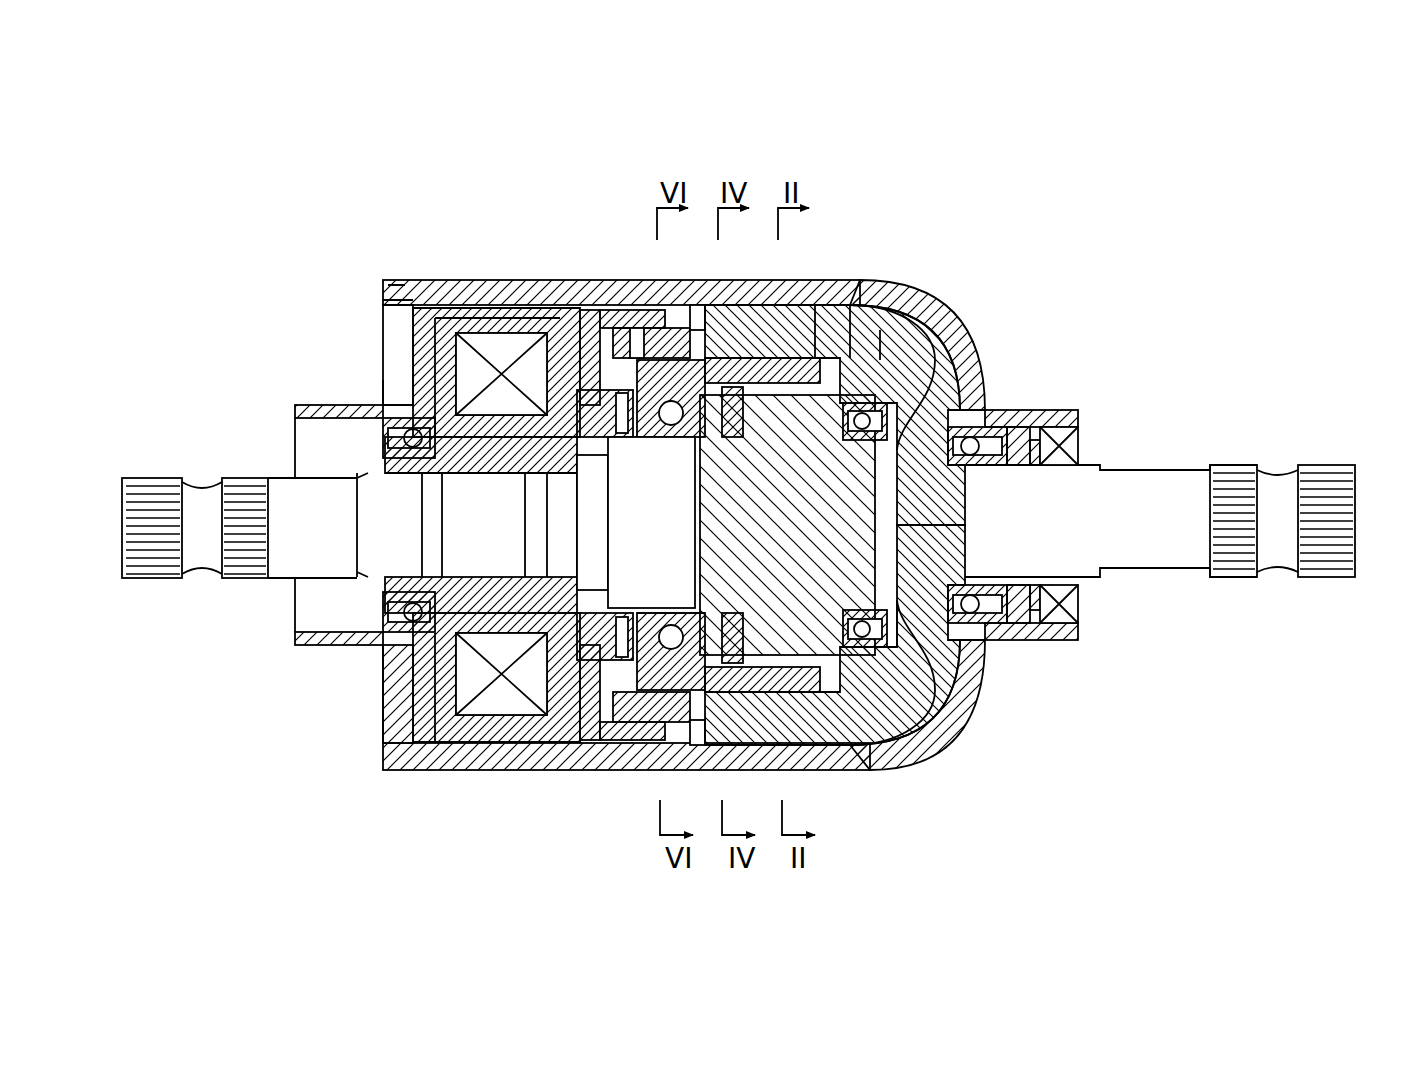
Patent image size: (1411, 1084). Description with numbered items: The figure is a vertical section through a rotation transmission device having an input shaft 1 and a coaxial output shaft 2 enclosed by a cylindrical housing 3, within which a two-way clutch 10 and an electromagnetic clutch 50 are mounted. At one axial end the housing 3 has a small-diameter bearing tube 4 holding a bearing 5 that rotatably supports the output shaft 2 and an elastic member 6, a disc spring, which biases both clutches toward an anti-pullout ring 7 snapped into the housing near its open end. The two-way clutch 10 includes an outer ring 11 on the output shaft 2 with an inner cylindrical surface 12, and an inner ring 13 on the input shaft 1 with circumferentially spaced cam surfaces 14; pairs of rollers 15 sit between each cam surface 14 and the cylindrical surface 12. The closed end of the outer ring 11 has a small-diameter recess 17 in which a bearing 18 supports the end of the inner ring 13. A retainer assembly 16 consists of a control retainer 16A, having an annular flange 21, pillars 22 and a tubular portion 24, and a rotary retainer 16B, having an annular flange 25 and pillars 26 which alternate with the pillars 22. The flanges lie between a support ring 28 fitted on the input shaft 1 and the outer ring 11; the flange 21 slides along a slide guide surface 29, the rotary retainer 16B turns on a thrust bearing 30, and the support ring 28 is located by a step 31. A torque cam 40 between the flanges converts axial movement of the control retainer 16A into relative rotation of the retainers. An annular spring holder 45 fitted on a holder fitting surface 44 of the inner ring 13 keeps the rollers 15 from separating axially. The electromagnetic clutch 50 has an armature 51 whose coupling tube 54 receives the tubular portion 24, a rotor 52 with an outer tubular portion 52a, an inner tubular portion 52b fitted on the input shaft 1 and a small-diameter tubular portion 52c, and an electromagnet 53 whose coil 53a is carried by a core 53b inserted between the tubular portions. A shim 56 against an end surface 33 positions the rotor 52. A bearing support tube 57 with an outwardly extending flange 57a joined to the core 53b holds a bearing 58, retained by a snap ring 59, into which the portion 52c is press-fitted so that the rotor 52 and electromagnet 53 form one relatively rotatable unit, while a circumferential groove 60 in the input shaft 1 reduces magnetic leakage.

The input shaft 1 is at (153, 478).
The output shaft 2 is at (1152, 480).
The housing 3 is at (385, 278).
The bearing tube 4 is at (1060, 418).
The bearing 5 is at (990, 427).
The elastic member 6 is at (1030, 427).
The anti-pullout ring 7 is at (390, 300).
The two-way clutch 10 is at (748, 302).
The outer ring 11 is at (815, 335).
The cylindrical surface 12 is at (835, 340).
The inner ring 13 is at (940, 350).
The cam surfaces 14 is at (905, 320).
The rollers 15 is at (880, 350).
The retainer assembly 16 is at (700, 725).
The control retainer 16A is at (697, 322).
The rotary retainer 16B is at (640, 345).
The small-diameter recess 17 is at (915, 685).
The bearing 18 is at (862, 655).
The annular flange 21 is at (703, 600).
The pillars 22 is at (800, 692).
The tubular portion 24 is at (655, 330).
The annular flange 25 is at (652, 437).
The pillars 26 is at (778, 358).
The support ring 28 is at (592, 735).
The slide guide surface 29 is at (667, 610).
The thrust bearing 30 is at (622, 437).
The step 31 is at (595, 528).
The end surface 33 is at (577, 500).
The torque cam 40 is at (673, 437).
The holder fitting surface 44 is at (748, 440).
The annular spring holder 45 is at (740, 400).
The electromagnetic clutch 50 is at (455, 303).
The armature 51 is at (590, 330).
The rotor 52 is at (525, 325).
The outer tubular portion 52a is at (485, 315).
The inner tubular portion 52b is at (463, 465).
The small-diameter tubular portion 52c is at (412, 465).
The electromagnet 53 is at (440, 320).
The electromagnetic coil 53a is at (508, 705).
The core 53b is at (428, 720).
The coupling tube 54 is at (620, 320).
The shim 56 is at (562, 600).
The bearing support tube 57 is at (325, 405).
The outwardly extending flange 57a is at (413, 335).
The bearing 58 is at (390, 397).
The snap ring 59 is at (395, 440).
The circumferential groove 60 is at (413, 648).